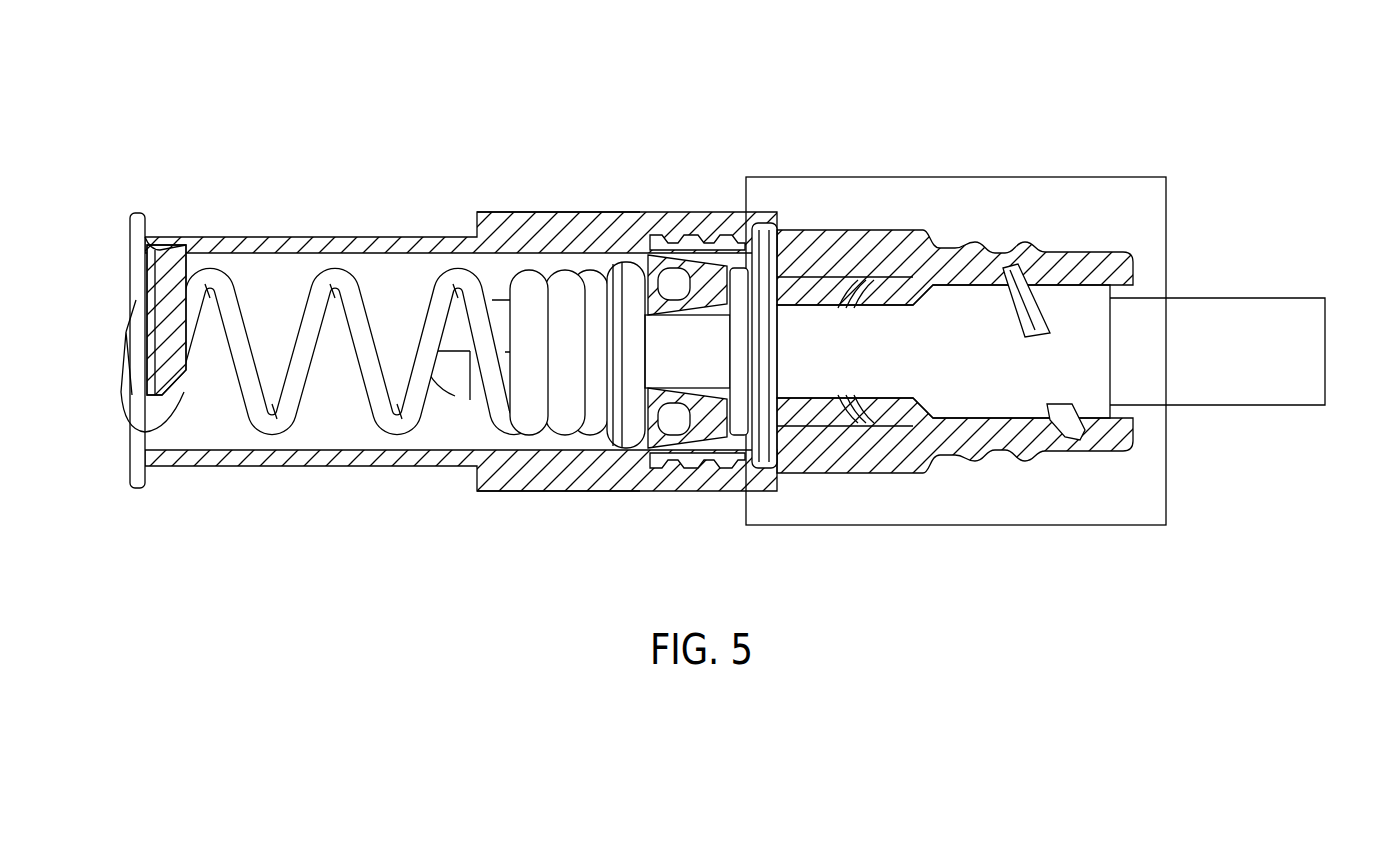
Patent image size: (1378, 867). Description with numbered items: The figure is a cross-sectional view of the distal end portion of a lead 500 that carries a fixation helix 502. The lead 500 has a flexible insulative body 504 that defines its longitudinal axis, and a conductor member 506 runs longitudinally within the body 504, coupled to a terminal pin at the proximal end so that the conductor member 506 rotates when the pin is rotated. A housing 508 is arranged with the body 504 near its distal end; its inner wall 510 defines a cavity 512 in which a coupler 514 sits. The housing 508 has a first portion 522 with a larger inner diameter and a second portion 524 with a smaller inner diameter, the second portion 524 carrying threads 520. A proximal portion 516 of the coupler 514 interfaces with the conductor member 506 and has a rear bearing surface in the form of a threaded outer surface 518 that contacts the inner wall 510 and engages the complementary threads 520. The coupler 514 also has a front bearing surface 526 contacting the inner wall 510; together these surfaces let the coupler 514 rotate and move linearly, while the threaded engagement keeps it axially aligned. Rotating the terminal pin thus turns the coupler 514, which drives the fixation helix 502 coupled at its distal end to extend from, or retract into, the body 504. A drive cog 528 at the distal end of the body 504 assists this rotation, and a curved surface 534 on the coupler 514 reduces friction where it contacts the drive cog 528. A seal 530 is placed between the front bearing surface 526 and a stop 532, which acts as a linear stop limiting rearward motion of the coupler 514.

The lead 500 is at (140, 150).
The fixation helix 502 is at (150, 405).
The flexible insulative body 504 is at (1100, 192).
The conductor member 506 is at (1178, 298).
The housing 508 is at (350, 240).
The inner wall 510 is at (465, 240).
The cavity 512 is at (808, 262).
The coupler 514 is at (855, 308).
The proximal portion 516 is at (1025, 272).
The threaded outer surface 518 is at (940, 435).
The threads 520 is at (822, 430).
The first portion 522 is at (527, 228).
The second portion 524 is at (818, 240).
The front bearing surface 526 is at (622, 465).
The drive cog 528 is at (168, 300).
The seal 530 is at (685, 255).
The stop 532 is at (750, 262).
The curved surface 534 is at (455, 385).